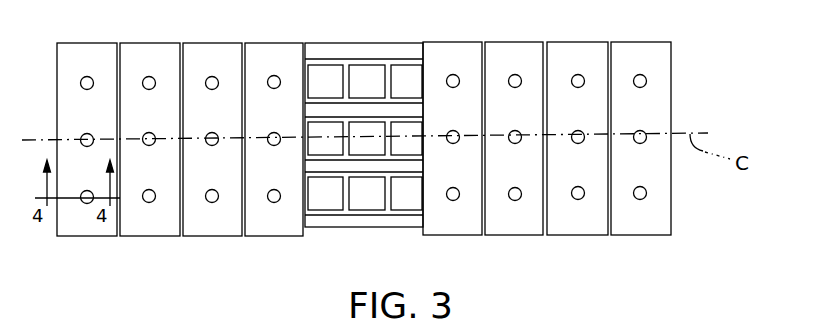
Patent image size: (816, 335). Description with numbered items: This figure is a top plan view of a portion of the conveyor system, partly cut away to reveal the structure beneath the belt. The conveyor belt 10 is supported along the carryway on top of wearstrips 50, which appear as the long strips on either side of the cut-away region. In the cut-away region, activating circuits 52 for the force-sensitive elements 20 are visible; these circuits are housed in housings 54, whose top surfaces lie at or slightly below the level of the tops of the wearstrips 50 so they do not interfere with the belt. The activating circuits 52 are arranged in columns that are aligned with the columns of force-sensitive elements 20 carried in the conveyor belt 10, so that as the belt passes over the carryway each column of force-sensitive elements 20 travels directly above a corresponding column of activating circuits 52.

The conveyor belt 10 is at (667, 110).
The force-sensitive elements 20 is at (646, 193).
The wearstrips 50 is at (354, 134).
The activating circuits 52 is at (365, 198).
The housings 54 is at (328, 73).